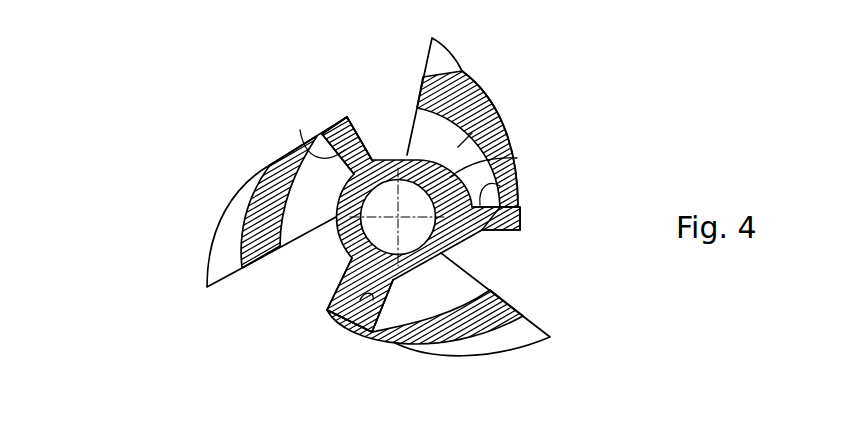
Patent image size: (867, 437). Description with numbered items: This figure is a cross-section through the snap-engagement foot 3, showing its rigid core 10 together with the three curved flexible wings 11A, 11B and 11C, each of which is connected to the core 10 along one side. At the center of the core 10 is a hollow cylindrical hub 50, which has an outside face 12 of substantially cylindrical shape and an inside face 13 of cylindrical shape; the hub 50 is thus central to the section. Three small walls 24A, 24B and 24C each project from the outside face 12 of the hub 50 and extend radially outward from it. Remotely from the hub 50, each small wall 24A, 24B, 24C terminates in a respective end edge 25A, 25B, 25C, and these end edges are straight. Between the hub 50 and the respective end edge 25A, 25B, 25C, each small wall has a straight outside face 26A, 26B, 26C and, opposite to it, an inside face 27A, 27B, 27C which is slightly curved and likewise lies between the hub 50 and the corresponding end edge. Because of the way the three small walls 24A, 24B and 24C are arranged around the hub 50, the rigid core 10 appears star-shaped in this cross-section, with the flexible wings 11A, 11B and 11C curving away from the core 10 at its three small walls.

The snap-engagement foot 3 is at (622, 198).
The rigid core 10 is at (341, 244).
The curved flexible wing 11A is at (280, 162).
The curved flexible wing 11B is at (497, 118).
The curved flexible wing 11C is at (400, 323).
The outside face 12 is at (388, 160).
The inside face 13 is at (370, 193).
The small wall 24A is at (338, 118).
The small wall 24B is at (500, 233).
The small wall 24C is at (347, 323).
The end edge 25A is at (343, 120).
The end edge 25B is at (520, 218).
The end edge 25C is at (347, 305).
The outside face 26A is at (368, 127).
The outside face 26B is at (487, 233).
The outside face 26C is at (333, 292).
The inside face 27A is at (307, 168).
The inside face 27B is at (517, 183).
The inside face 27C is at (377, 327).
The hollow cylindrical hub 50 is at (517, 158).